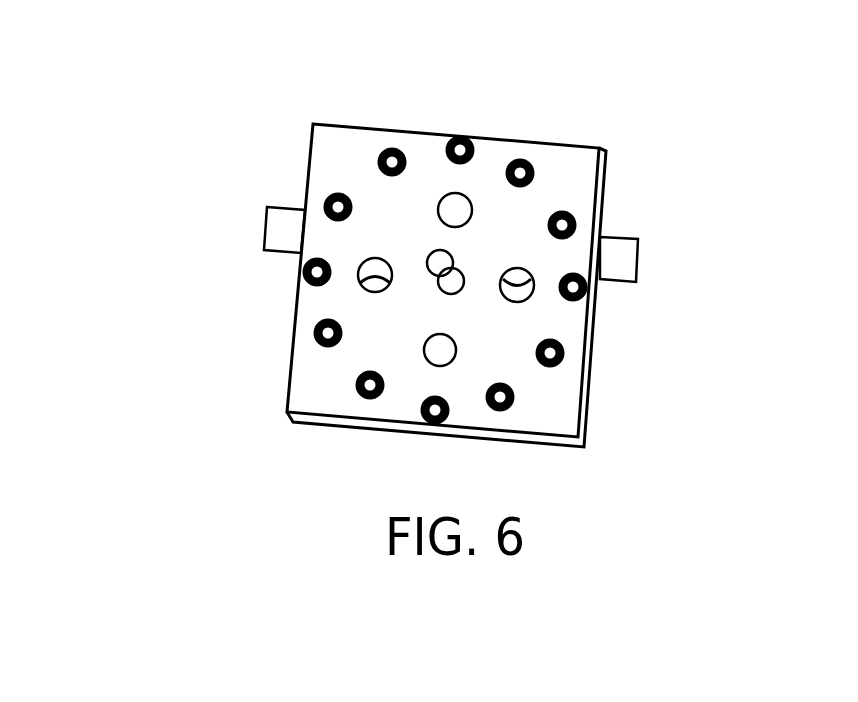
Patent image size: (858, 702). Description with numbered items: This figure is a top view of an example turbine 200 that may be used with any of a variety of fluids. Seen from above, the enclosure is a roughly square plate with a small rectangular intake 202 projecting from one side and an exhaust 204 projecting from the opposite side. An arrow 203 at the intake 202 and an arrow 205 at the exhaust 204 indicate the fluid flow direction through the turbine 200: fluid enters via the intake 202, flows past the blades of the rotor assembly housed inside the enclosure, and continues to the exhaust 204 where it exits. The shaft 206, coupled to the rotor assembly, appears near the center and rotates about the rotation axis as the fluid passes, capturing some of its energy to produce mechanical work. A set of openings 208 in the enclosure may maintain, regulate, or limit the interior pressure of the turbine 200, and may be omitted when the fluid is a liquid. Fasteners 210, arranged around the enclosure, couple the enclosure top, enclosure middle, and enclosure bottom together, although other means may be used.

The turbine 200 is at (751, 91).
The intake 202 is at (639, 251).
The arrow 203 is at (654, 262).
The exhaust 204 is at (270, 207).
The arrow 205 is at (258, 227).
The shaft 206 is at (453, 263).
The openings 208 is at (439, 211).
The fasteners 210 is at (392, 148).